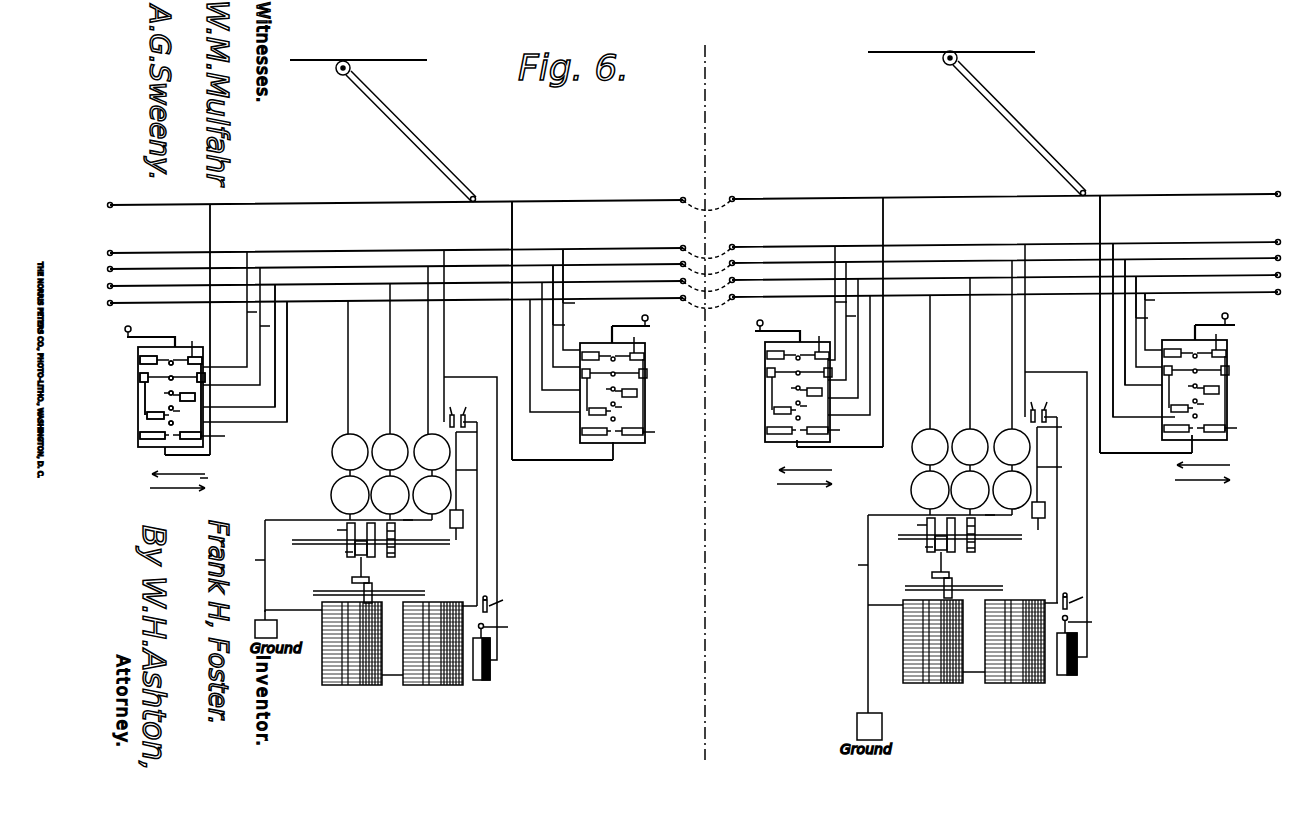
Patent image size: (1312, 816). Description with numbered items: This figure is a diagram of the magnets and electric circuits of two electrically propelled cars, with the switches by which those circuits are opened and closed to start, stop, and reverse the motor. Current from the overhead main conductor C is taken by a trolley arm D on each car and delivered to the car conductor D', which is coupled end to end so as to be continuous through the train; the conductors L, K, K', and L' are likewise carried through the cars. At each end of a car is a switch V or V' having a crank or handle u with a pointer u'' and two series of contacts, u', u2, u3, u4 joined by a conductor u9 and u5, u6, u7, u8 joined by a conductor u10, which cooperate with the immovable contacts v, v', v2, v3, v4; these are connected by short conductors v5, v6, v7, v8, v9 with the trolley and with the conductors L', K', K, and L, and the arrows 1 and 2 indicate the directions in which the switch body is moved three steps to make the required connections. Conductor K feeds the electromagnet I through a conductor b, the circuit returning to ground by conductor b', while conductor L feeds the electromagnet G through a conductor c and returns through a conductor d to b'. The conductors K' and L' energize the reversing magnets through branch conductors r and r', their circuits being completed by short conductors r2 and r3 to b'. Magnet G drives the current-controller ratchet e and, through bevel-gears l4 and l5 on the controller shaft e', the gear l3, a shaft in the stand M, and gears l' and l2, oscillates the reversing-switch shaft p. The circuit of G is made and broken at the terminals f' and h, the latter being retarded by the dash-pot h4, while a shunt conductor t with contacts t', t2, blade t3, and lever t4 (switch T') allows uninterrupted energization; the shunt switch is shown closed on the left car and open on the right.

The main conductor C is at (662, 52).
The trolley arm D is at (716, 131).
The car conductor D' is at (694, 190).
The conductor L is at (694, 240).
The conductor K is at (694, 257).
The conductor K' is at (694, 274).
The conductor L' is at (694, 302).
The switch V is at (485, 379).
The switch V' is at (904, 370).
The pointer u'' is at (679, 330).
The crank or handle u is at (676, 325).
The contact u' is at (715, 431).
The contact u2 is at (718, 395).
The contact u3 is at (727, 366).
The contact u4 is at (722, 341).
The contact u5 is at (638, 440).
The contact u6 is at (640, 411).
The contact u7 is at (636, 373).
The contact u8 is at (640, 346).
The conductor u9 is at (728, 400).
The conductor u10 is at (651, 397).
The contact v is at (683, 419).
The contact v' is at (683, 400).
The contact v2 is at (684, 349).
The contact v3 is at (684, 367).
The contact v4 is at (683, 349).
The short conductor v5 is at (817, 328).
The short conductor v6 is at (701, 333).
The short conductor v7 is at (699, 333).
The short conductor v8 is at (697, 298).
The short conductor v9 is at (864, 280).
The arrow 1 is at (691, 464).
The arrow 2 is at (690, 491).
The branch conductor r is at (685, 356).
The branch conductor r' is at (639, 364).
The short conductor r2 is at (701, 510).
The short conductor r3 is at (638, 511).
The conductor b is at (711, 347).
The conductor b' is at (555, 614).
The conductor c is at (772, 452).
The conductor d is at (661, 599).
The stand M is at (680, 503).
The magnet M' is at (640, 474).
The electromagnet I is at (722, 474).
The ratchet e is at (688, 542).
The shaft e' is at (657, 548).
The bevel-gear l' is at (639, 577).
The bevel-gear l2 is at (671, 585).
The bevel-gear l3 is at (633, 560).
The bevel-gear l4 is at (660, 530).
The bevel-gear l5 is at (630, 537).
The shaft p is at (663, 583).
The electromagnet G is at (683, 656).
The terminal T' is at (763, 417).
The shunt-conductor t is at (762, 511).
The contact t' is at (741, 408).
The contact t2 is at (760, 407).
The blade t3 is at (766, 405).
The lever t4 is at (766, 467).
The lever f' is at (788, 598).
The terminal h is at (791, 626).
The cylinder or dash-pot h4 is at (786, 658).